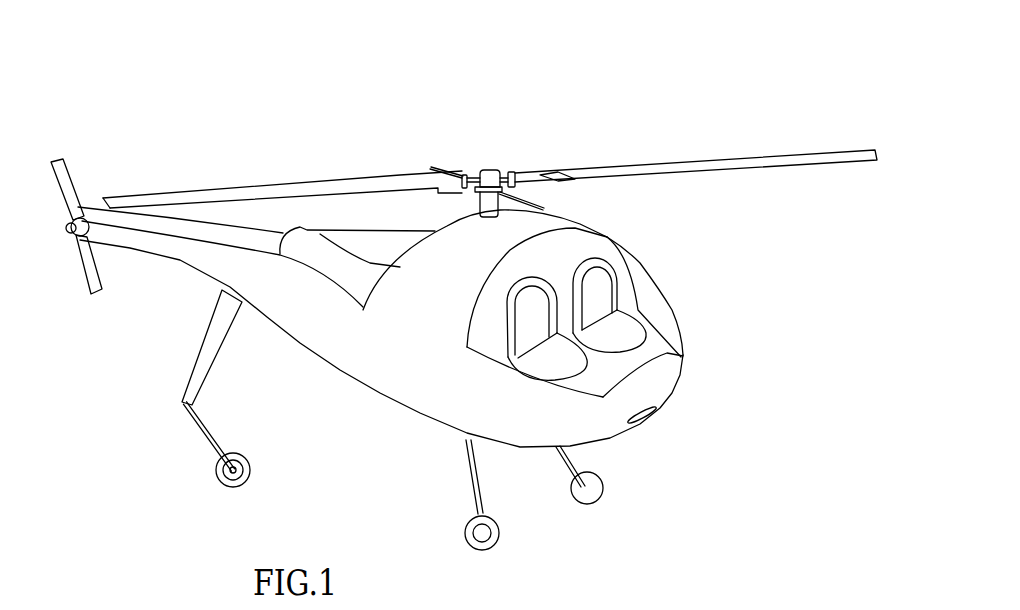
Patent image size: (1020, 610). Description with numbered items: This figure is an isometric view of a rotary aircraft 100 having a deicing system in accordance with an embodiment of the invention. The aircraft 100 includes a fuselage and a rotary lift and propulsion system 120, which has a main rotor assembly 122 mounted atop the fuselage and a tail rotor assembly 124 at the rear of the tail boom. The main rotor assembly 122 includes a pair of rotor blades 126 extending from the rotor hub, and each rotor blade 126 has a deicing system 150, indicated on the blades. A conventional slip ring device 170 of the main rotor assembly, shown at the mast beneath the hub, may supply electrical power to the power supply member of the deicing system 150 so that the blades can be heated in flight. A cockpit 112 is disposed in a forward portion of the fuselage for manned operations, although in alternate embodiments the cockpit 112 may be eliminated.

The rotary aircraft 100 is at (462, 300).
The cockpit 112 is at (612, 234).
The rotary lift and propulsion system 120 is at (490, 190).
The main rotor assembly 122 is at (463, 152).
The tail rotor assembly 124 is at (63, 262).
The rotor blade 126 is at (263, 184).
The deicing system 150 is at (263, 205).
The slip ring device 170 is at (463, 197).